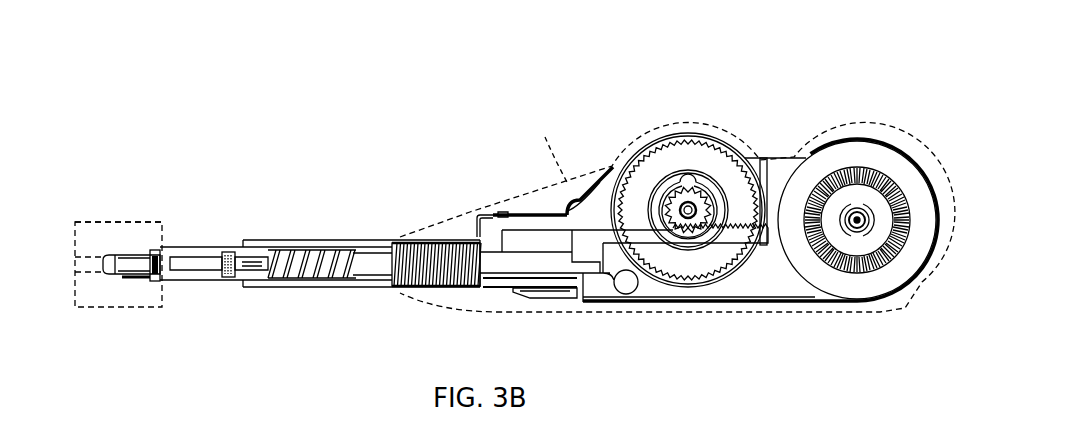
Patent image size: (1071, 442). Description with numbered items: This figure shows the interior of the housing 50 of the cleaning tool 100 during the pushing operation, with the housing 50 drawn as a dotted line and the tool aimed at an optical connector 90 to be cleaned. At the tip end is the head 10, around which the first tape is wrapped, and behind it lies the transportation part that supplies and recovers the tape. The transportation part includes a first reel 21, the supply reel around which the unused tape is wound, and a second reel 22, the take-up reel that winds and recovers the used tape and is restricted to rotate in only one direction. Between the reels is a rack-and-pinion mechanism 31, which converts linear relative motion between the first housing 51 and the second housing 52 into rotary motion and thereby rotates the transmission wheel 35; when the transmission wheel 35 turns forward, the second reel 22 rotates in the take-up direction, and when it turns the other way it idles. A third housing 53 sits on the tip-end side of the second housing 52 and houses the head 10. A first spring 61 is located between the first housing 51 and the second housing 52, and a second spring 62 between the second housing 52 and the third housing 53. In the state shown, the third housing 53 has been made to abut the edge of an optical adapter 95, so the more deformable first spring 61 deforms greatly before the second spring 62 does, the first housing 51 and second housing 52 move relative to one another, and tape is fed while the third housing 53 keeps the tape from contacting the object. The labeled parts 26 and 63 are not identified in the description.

The cleaning tool 100 is at (487, 82).
The head 10 is at (148, 255).
The first reel 21 is at (853, 148).
The second reel 22 is at (685, 155).
The shaft 26 is at (372, 258).
The rack-and-pinion mechanism 31 is at (722, 200).
The transmission wheel 35 is at (675, 222).
The housing 50 is at (677, 217).
The first housing 51 is at (587, 172).
The second housing 52 is at (372, 288).
The third housing 53 is at (130, 278).
The first spring 61 is at (440, 248).
The second spring 62 is at (318, 250).
The stopper 63 is at (226, 258).
The optical connector 90 is at (87, 253).
The optical adapter 95 is at (122, 222).